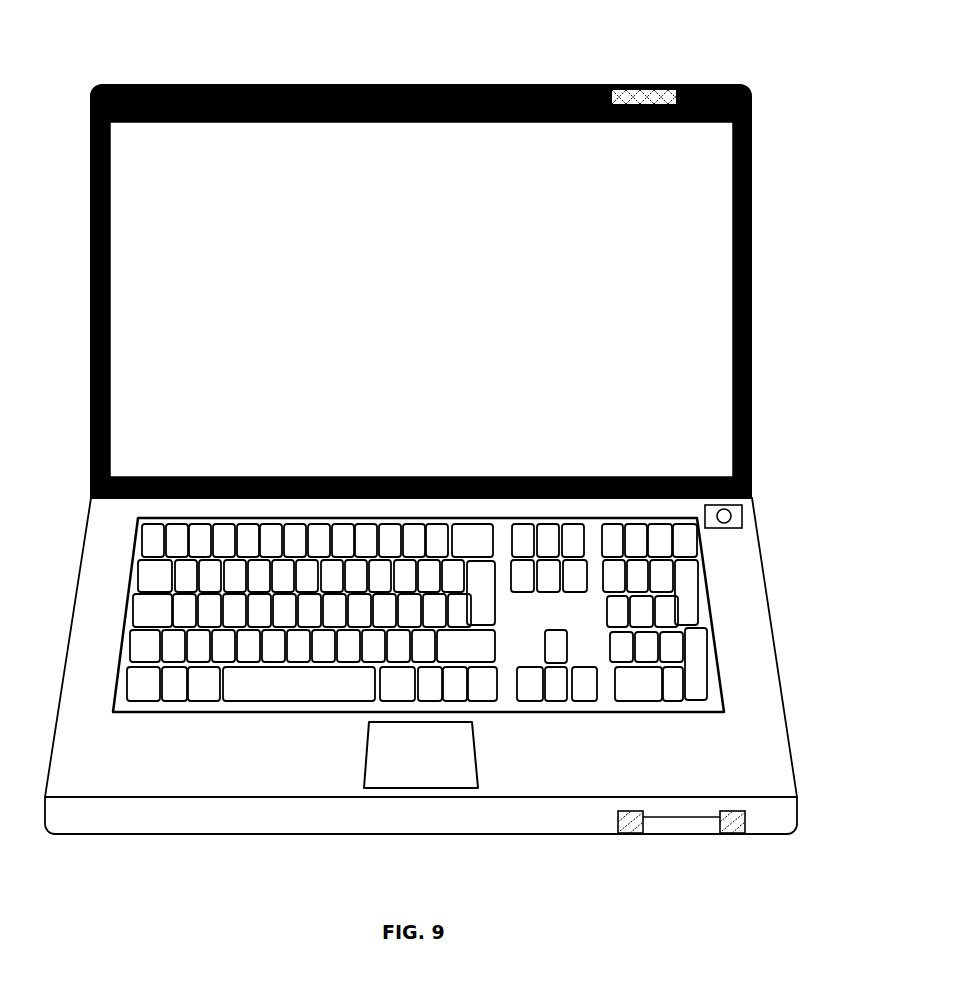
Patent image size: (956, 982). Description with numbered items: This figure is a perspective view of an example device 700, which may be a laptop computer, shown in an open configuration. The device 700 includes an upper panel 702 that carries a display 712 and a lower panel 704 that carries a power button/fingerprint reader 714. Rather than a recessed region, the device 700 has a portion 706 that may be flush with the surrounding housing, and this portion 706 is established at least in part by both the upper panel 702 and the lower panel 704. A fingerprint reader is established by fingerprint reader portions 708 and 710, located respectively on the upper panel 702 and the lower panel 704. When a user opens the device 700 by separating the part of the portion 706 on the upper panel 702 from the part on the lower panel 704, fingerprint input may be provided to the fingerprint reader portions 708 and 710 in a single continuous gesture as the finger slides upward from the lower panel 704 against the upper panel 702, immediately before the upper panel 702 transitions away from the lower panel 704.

The device 700 is at (796, 63).
The upper panel 702 is at (458, 278).
The lower panel 704 is at (444, 676).
The portion 706 is at (695, 86).
The fingerprint reader portion 708 is at (628, 87).
The fingerprint reader portion 710 is at (654, 829).
The display 712 is at (152, 153).
The power button/fingerprint reader 714 is at (742, 508).